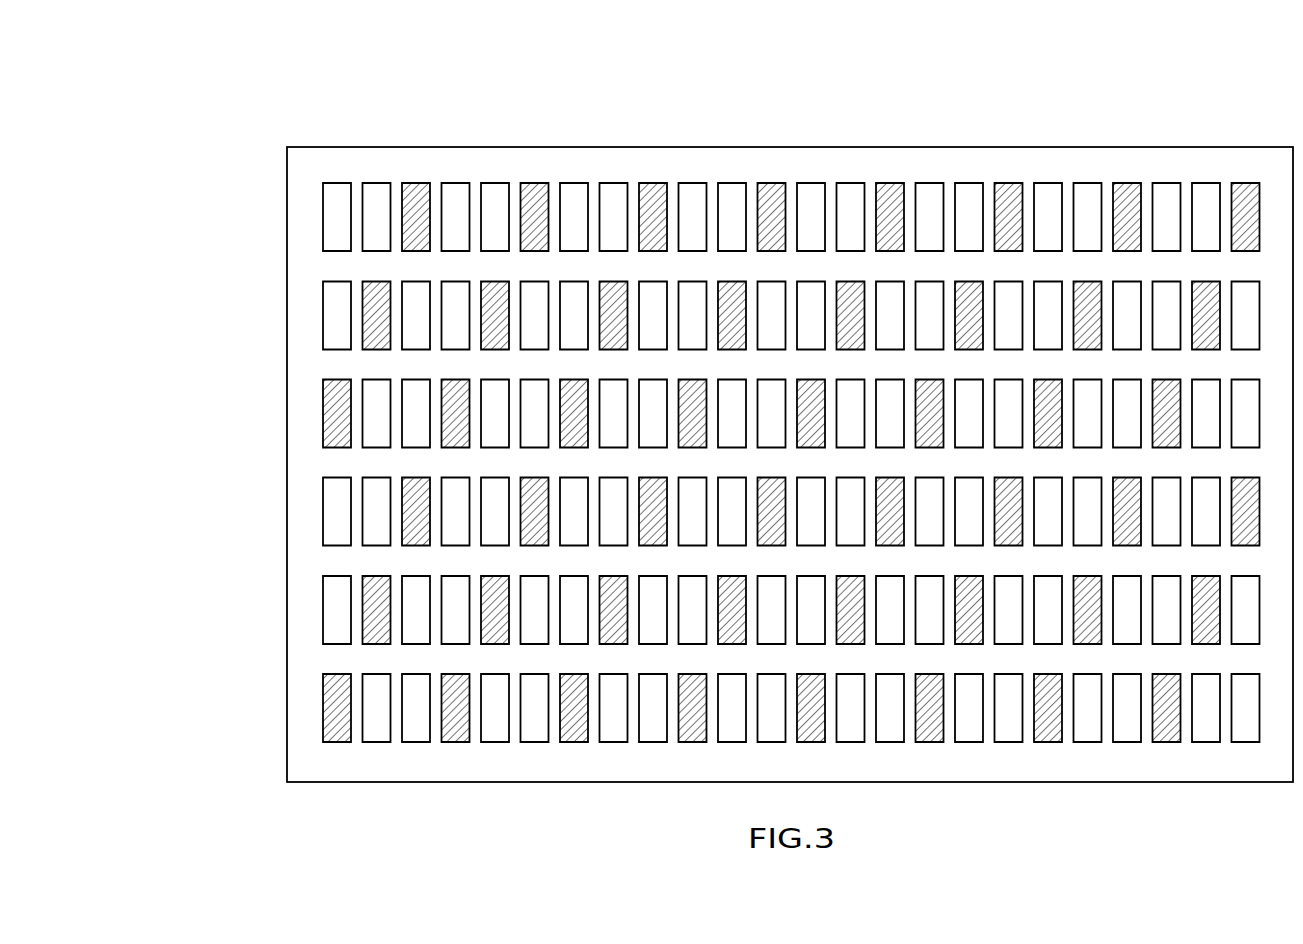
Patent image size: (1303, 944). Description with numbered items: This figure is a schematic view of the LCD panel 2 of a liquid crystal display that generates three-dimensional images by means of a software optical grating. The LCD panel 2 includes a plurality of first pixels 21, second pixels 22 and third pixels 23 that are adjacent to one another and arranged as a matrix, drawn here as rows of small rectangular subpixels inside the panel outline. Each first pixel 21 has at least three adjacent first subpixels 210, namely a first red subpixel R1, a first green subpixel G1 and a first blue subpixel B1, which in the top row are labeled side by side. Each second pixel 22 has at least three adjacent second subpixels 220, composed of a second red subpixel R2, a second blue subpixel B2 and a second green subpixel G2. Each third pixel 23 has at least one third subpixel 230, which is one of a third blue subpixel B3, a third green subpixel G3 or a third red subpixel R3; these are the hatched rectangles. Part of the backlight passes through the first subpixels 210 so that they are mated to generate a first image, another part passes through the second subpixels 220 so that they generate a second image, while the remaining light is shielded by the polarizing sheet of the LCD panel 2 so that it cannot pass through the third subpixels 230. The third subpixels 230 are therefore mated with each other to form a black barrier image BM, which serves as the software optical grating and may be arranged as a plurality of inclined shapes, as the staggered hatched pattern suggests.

The LCD panel 2 is at (1279, 66).
The first pixel 21 is at (372, 73).
The first subpixel 210 is at (408, 106).
The first red subpixel R1 is at (338, 193).
The first green subpixel G1 is at (380, 193).
The first blue subpixel B1 is at (416, 290).
The second pixel 22 is at (172, 337).
The second subpixel 220 is at (225, 307).
The second red subpixel R2 is at (330, 293).
The second blue subpixel B2 is at (420, 387).
The second green subpixel G2 is at (378, 387).
The third pixel 23 is at (470, 73).
The third subpixel 230 is at (467, 106).
The third blue subpixel B3 is at (415, 193).
The third green subpixel G3 is at (378, 290).
The third red subpixel R3 is at (328, 440).
The black barrier image BM is at (316, 712).